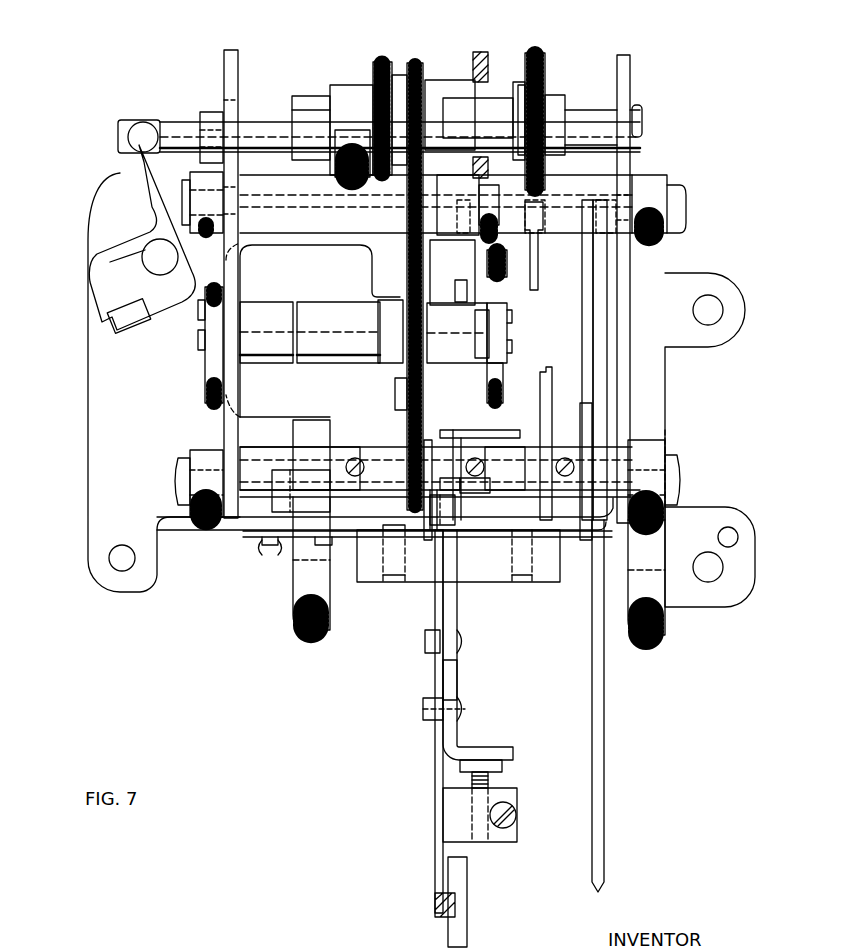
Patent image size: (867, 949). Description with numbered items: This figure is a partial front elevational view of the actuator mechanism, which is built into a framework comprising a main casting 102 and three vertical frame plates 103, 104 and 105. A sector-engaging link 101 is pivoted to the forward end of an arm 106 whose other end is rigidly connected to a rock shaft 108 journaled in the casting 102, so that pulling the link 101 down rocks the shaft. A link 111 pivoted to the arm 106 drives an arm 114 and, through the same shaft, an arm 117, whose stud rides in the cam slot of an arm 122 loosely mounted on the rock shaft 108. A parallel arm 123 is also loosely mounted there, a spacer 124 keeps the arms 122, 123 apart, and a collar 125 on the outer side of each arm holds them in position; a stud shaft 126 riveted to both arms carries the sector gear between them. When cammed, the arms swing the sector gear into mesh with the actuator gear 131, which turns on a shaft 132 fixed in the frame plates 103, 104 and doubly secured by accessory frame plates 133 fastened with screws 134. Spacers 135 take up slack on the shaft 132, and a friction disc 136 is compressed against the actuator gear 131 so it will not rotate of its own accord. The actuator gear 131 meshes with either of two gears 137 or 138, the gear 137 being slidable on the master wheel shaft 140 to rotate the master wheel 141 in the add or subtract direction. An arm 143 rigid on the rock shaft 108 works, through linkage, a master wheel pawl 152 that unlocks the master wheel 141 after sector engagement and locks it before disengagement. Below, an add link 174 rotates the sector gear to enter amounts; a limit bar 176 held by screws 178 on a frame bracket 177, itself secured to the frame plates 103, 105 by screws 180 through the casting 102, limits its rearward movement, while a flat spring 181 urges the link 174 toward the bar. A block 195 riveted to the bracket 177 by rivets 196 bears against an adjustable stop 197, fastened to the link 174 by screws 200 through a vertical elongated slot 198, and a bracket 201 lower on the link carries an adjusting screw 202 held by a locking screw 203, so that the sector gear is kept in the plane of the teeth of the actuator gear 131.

The link 101 is at (604, 704).
The main casting 102 is at (88, 423).
The left actuator frame plate 103 is at (233, 55).
The center actuator frame plate 104 is at (481, 52).
The right actuator frame plate 105 is at (625, 57).
The arm 106 is at (586, 425).
The rock shaft 108 is at (293, 458).
The link 111 is at (600, 384).
The arm 114 is at (591, 290).
The arm 117 is at (512, 282).
The arm 122 is at (455, 431).
The arm 123 is at (395, 396).
The spacer 124 is at (428, 505).
The collar 125 is at (355, 447).
The stud shaft 126 is at (380, 362).
The actuator gear 131 is at (405, 200).
The shaft 132 is at (205, 333).
The accessory frame plate 133 is at (210, 385).
The screw 134 is at (205, 348).
The spacer 135 is at (275, 345).
The friction disc 136 is at (376, 310).
The gear 137 is at (413, 62).
The gear 138 is at (350, 177).
The master wheel shaft 140 is at (222, 106).
The master wheel 141 is at (538, 60).
The arm 143 is at (551, 395).
The master wheel pawl 152 is at (537, 270).
The add link 174 is at (440, 851).
The limit bar 176 is at (250, 537).
The frame bracket 177 is at (245, 519).
The screw 178 is at (268, 548).
The screw 180 is at (178, 465).
The flat spring 181 is at (290, 470).
The block 195 is at (367, 570).
The rivet 196 is at (392, 584).
The adjustable stop 197 is at (438, 585).
The vertical elongated slot 198 is at (450, 676).
The screw 200 is at (463, 705).
The bracket 201 is at (512, 844).
The adjusting screw 202 is at (502, 768).
The locking screw 203 is at (514, 818).